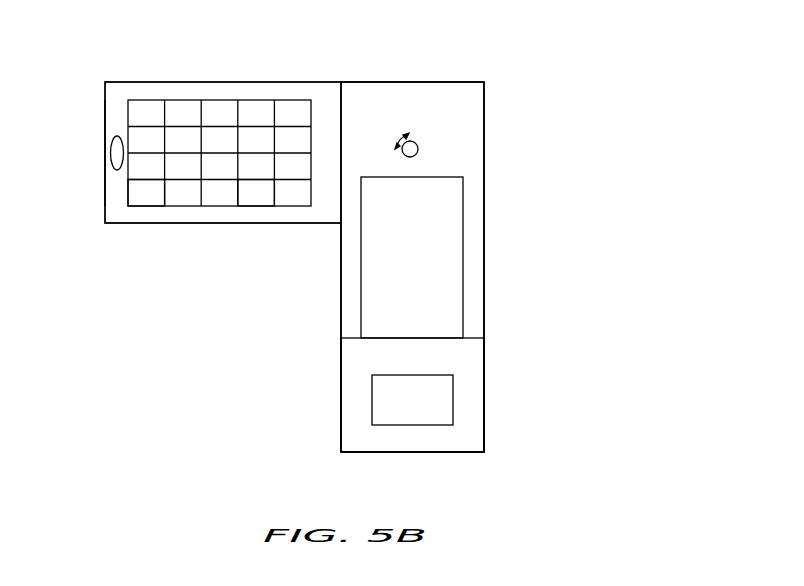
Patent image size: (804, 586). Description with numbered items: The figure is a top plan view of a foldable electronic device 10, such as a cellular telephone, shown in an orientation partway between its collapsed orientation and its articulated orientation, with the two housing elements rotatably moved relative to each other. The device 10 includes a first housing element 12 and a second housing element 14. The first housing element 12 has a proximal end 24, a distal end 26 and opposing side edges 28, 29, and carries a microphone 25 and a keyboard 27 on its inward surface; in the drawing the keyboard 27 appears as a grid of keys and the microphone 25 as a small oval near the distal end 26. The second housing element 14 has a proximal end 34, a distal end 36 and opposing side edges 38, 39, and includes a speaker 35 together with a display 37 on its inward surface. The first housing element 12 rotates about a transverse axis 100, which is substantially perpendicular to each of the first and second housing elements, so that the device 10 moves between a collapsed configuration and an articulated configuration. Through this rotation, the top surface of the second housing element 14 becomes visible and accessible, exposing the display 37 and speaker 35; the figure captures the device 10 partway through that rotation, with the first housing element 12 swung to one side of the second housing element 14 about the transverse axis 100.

The foldable electronic device 10 is at (612, 56).
The first housing element 12 is at (82, 212).
The second housing element 14 is at (486, 282).
The proximal end 24 is at (486, 178).
The microphone 25 is at (110, 152).
The distal end 26 is at (104, 131).
The keyboard 27 is at (172, 207).
The side edge 28 is at (219, 82).
The side edge 29 is at (237, 222).
The proximal end 34 is at (471, 452).
The speaker 35 is at (372, 398).
The distal end 36 is at (463, 82).
The display 37 is at (443, 226).
The side edge 38 is at (341, 336).
The side edge 39 is at (477, 382).
The transverse axis 100 is at (418, 149).